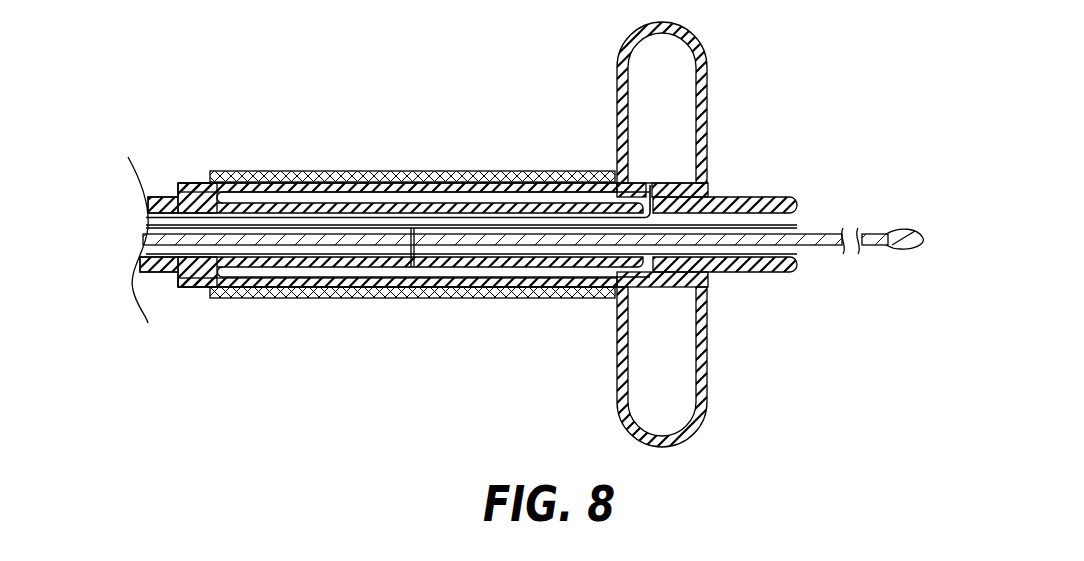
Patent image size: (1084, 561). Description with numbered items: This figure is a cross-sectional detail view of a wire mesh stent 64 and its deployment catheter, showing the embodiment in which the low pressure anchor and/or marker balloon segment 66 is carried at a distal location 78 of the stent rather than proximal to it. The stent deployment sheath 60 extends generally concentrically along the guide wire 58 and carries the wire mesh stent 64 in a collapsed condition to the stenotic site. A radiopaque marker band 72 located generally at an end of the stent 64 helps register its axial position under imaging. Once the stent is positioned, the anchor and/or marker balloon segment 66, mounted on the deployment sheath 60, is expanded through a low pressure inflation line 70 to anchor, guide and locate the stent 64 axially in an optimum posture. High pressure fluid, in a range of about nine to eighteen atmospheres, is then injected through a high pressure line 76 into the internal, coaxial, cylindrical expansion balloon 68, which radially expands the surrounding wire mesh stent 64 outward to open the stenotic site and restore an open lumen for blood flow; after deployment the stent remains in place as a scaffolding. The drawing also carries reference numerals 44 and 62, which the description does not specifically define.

The balloon 44 is at (673, 226).
The guide wire 58 is at (818, 232).
The stent deployment sheath 60 is at (163, 191).
The distal end of tubular member 62 is at (807, 269).
The wire mesh stent 64 is at (313, 171).
The anchor and/or marker balloon segment 66 is at (693, 36).
The cylindrical expansion balloon 68 is at (377, 299).
The low pressure inflation line 70 is at (152, 220).
The radiopaque marker band 72 is at (192, 288).
The high pressure line 76 is at (146, 236).
The distal location of the wire mesh stent 78 is at (612, 302).